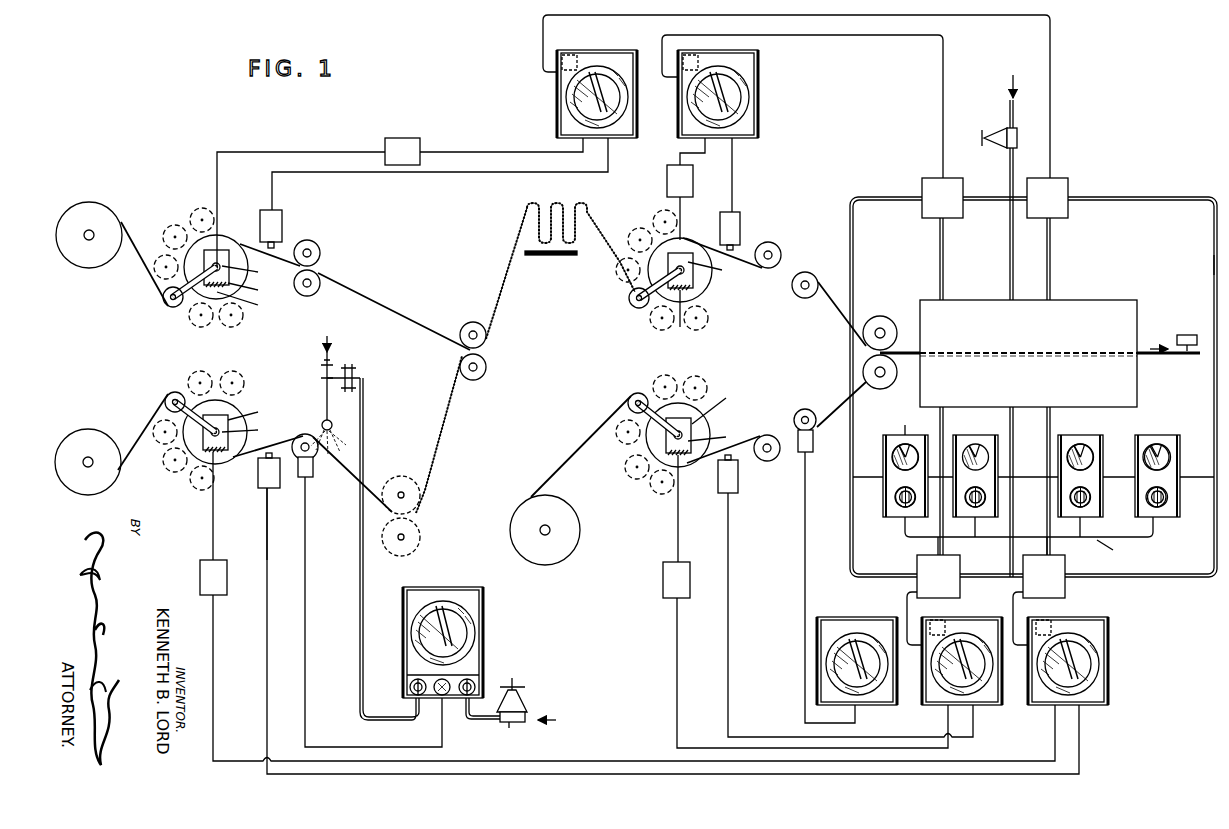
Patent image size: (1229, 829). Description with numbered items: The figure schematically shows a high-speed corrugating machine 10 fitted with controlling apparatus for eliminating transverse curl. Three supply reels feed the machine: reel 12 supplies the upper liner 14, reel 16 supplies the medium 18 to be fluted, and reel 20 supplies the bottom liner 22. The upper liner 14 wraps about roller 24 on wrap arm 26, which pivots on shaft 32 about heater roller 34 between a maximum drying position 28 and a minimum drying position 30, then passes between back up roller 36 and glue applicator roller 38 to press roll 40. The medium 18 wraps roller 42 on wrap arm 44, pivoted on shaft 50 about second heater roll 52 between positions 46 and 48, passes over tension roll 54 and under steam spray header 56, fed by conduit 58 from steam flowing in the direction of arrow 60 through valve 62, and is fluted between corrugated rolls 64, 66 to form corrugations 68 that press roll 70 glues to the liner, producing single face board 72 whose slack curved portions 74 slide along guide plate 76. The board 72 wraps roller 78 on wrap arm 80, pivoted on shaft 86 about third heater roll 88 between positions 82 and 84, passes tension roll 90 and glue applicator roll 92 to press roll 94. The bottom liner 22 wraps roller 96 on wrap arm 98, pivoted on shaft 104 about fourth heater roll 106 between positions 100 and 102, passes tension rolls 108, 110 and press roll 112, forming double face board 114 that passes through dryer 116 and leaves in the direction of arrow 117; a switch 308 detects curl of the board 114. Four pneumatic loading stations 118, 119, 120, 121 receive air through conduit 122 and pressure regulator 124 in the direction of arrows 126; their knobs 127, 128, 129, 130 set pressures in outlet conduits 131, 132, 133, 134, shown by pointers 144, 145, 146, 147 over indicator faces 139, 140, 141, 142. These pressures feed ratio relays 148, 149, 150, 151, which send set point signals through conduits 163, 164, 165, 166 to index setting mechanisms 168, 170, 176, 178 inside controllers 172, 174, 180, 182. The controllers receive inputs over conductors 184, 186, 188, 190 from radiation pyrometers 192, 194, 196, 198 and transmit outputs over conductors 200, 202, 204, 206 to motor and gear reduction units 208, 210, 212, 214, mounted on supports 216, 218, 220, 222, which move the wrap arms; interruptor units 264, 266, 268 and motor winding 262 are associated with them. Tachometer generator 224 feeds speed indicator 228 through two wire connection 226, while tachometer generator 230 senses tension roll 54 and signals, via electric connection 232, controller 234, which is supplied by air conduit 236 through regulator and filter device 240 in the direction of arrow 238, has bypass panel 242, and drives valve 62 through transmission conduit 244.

The corrugating machine 10 is at (165, 200).
The reel 12 is at (87, 205).
The upper liner 14 is at (147, 282).
The reel 16 is at (87, 430).
The medium 18 is at (148, 430).
The reel 20 is at (577, 542).
The bottom liner 22 is at (580, 455).
The wrap arm roller 24 is at (170, 306).
The wrap arm 26 is at (163, 240).
The maximum drying position 28 is at (237, 322).
The minimum drying position 30 is at (199, 208).
The shaft 32 is at (257, 291).
The heater roller 34 is at (226, 246).
The back up roller 36 is at (320, 251).
The glue applicator roller 38 is at (318, 292).
The press roll 40 is at (472, 322).
The wrap arm roller 42 is at (168, 393).
The wrap arm 44 is at (165, 452).
The maximum drying position 46 is at (236, 378).
The minimum drying position 48 is at (192, 484).
The shaft 50 is at (252, 429).
The second heater roll 52 is at (236, 405).
The tension roll 54 is at (312, 460).
The steam spray header 56 is at (331, 421).
The conduit 58 is at (322, 392).
The arrow 60 is at (330, 344).
The valve 62 is at (354, 368).
The corrugated roll 64 is at (400, 477).
The corrugated roll 66 is at (400, 557).
The corrugations 68 is at (447, 438).
The press roll 70 is at (478, 381).
The single face board 72 is at (500, 305).
The curved portions 74 is at (556, 203).
The guide plate 76 is at (552, 256).
The wrap arm roller 78 is at (638, 309).
The wrap arm 80 is at (623, 259).
The maximum drying position 82 is at (709, 322).
The minimum drying position 84 is at (658, 211).
The shaft 86 is at (642, 229).
The third heater roll 88 is at (712, 280).
The tension roll 90 is at (781, 251).
The glue applicator roll 92 is at (792, 290).
The press roll 94 is at (878, 316).
The wrap arm roller 96 is at (632, 395).
The wrap arm 98 is at (621, 448).
The maximum drying position 100 is at (702, 385).
The minimum drying position 102 is at (655, 489).
The shaft 104 is at (724, 434).
The fourth heater roll 106 is at (700, 428).
The tension roll 108 is at (770, 462).
The tension roll 110 is at (803, 410).
The press roll 112 is at (878, 389).
The double face board 114 is at (906, 350).
The dryer 116 is at (1085, 300).
The arrow 117 is at (1163, 347).
The pneumatic loading station 118 is at (905, 425).
The pneumatic loading station 119 is at (972, 440).
The pneumatic loading station 120 is at (1083, 440).
The pneumatic loading station 121 is at (1155, 440).
The conduit 122 is at (1009, 190).
The pressure regulator 124 is at (1002, 128).
The arrows 126 is at (1008, 80).
The knob 127 is at (895, 497).
The knob 128 is at (986, 497).
The knob 129 is at (1092, 497).
The knob 130 is at (1168, 497).
The outlet conduit 131 is at (848, 212).
The outlet conduit 132 is at (944, 255).
The outlet conduit 133 is at (1051, 248).
The outlet conduit 134 is at (1214, 264).
The indicator face 139 is at (895, 451).
The indicator face 140 is at (985, 452).
The indicator face 141 is at (1094, 455).
The indicator face 142 is at (1170, 455).
The pointer 144 is at (898, 460).
The pointer 145 is at (988, 458).
The pointer 146 is at (1093, 465).
The pointer 147 is at (1172, 462).
The ratio relay 148 is at (1058, 178).
The ratio relay 149 is at (917, 566).
The ratio relay 150 is at (932, 178).
The ratio relay 151 is at (1055, 570).
The conduit 163 is at (905, 606).
The conduit 164 is at (1052, 90).
The conduit 165 is at (1011, 602).
The conduit 166 is at (941, 89).
The index setting mechanism 168 is at (675, 58).
The index setting mechanism 170 is at (545, 58).
The controller indicator 172 is at (560, 112).
The controller indicator 174 is at (756, 112).
The index setting mechanism 176 is at (945, 624).
The index setting mechanism 178 is at (1048, 624).
The controller indicator 180 is at (935, 700).
The controller 182 is at (1110, 636).
The conductor 184 is at (487, 174).
The conductor 186 is at (733, 173).
The conductor 188 is at (773, 736).
The conductor 190 is at (610, 773).
The radiation pyrometer 192 is at (282, 216).
The radiation pyrometer 194 is at (742, 222).
The radiation pyrometer 196 is at (740, 482).
The radiation pyrometer 198 is at (269, 500).
The conductor 200 is at (482, 152).
The conductor 202 is at (679, 153).
The conductor 204 is at (676, 650).
The conductor 206 is at (654, 760).
The electric motor and gear reduction unit 208 is at (256, 273).
The electric motor and gear reduction unit 210 is at (722, 272).
The electric motor and gear reduction unit 212 is at (727, 402).
The electric motor and gear reduction unit 214 is at (259, 411).
The stationary support member 216 is at (254, 304).
The stationary support member 218 is at (693, 321).
The stationary support member 220 is at (684, 470).
The stationary support member 222 is at (217, 475).
The tachometer generator 224 is at (815, 455).
The two wire connection 226 is at (803, 560).
The speed indicator 228 is at (838, 622).
The tachometer generator 230 is at (312, 478).
The electric connection 232 is at (306, 582).
The controller 234 is at (462, 593).
The air pressure supply conduit 236 is at (528, 712).
The arrow 238 is at (557, 722).
The pressure regulator and filter device 240 is at (512, 684).
The manual control bypass panel 242 is at (409, 686).
The transmission conduit 244 is at (358, 632).
The motor winding 262 is at (663, 586).
The interruptor unit 264 is at (410, 138).
The interruptor unit 266 is at (667, 173).
The interruptor unit 268 is at (222, 566).
The switch 308 is at (1187, 335).